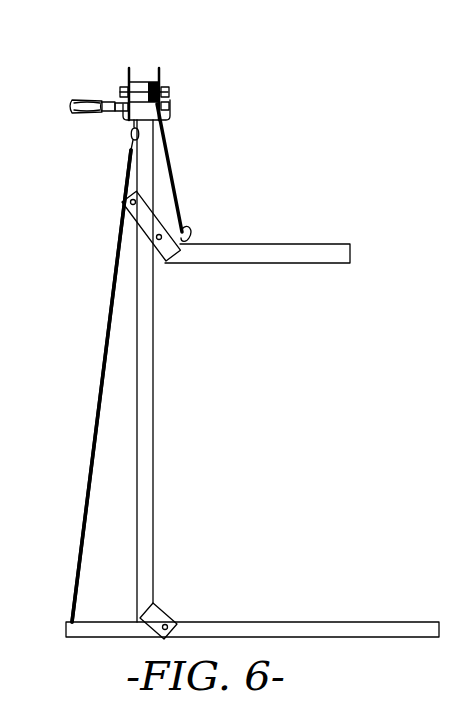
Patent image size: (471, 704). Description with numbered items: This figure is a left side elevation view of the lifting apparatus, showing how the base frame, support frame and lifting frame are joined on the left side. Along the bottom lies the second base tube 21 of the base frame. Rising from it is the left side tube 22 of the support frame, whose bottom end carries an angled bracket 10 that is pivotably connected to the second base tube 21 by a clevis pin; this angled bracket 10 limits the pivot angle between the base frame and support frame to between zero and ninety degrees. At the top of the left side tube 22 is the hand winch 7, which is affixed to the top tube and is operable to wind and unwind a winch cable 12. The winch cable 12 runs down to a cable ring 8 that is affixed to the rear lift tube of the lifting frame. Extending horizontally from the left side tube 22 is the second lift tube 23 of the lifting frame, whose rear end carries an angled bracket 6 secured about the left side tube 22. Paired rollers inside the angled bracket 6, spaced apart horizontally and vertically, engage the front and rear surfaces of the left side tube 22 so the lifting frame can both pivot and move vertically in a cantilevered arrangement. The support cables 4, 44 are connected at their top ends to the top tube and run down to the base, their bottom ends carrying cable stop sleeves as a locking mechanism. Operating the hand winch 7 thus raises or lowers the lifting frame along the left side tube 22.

The support cable 4 is at (87, 493).
The support cable 44 is at (101, 386).
The angled bracket 6 is at (167, 220).
The hand winch 7 is at (175, 85).
The cable ring 8 is at (186, 232).
The angled bracket 10 is at (166, 609).
The winch cable 12 is at (168, 158).
The second base tube 21 is at (338, 622).
The left side tube 22 is at (154, 393).
The second lift tube 23 is at (284, 264).